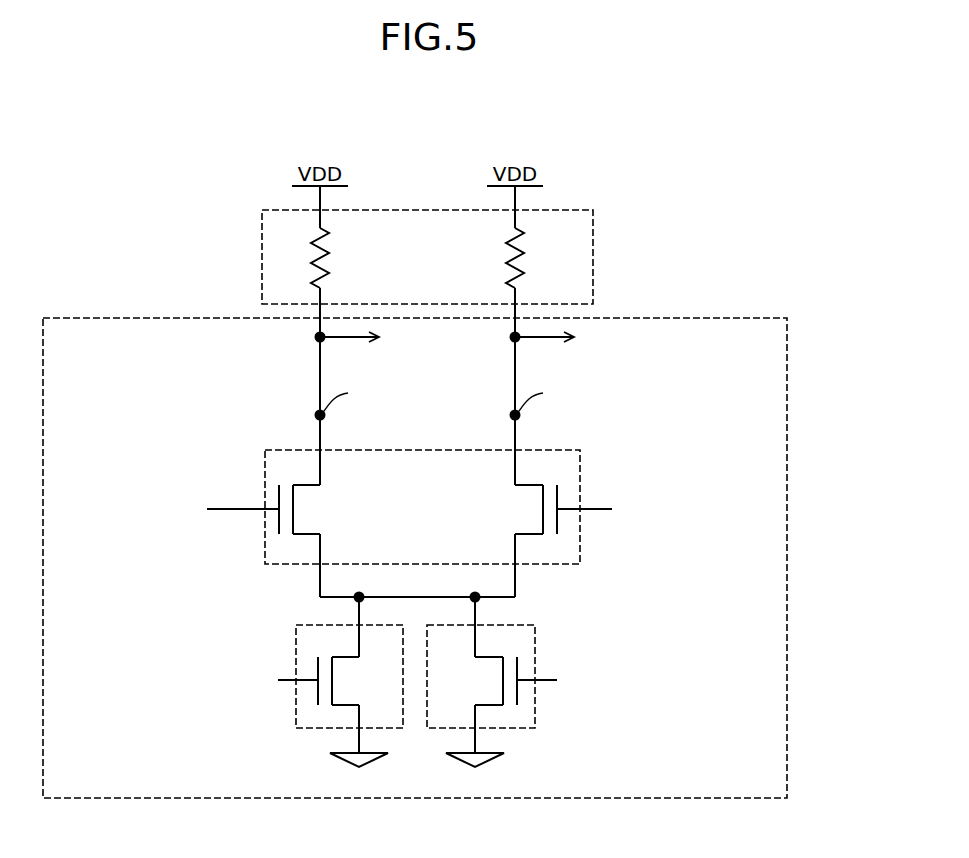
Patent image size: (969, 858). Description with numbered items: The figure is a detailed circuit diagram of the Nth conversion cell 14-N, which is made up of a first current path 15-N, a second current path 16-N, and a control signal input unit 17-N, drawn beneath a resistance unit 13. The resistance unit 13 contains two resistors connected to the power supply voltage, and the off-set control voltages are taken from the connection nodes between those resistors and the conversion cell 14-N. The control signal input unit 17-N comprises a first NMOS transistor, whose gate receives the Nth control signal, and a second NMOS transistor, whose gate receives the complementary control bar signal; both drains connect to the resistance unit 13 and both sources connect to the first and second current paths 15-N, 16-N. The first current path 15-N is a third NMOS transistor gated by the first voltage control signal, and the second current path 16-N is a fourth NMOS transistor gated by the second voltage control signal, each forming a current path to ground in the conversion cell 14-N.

The resistance unit 13 is at (593, 250).
The Nth conversion cell 14-N is at (787, 360).
The first current path 15-N is at (296, 640).
The second current path 16-N is at (535, 640).
The control signal input unit 17-N is at (580, 465).